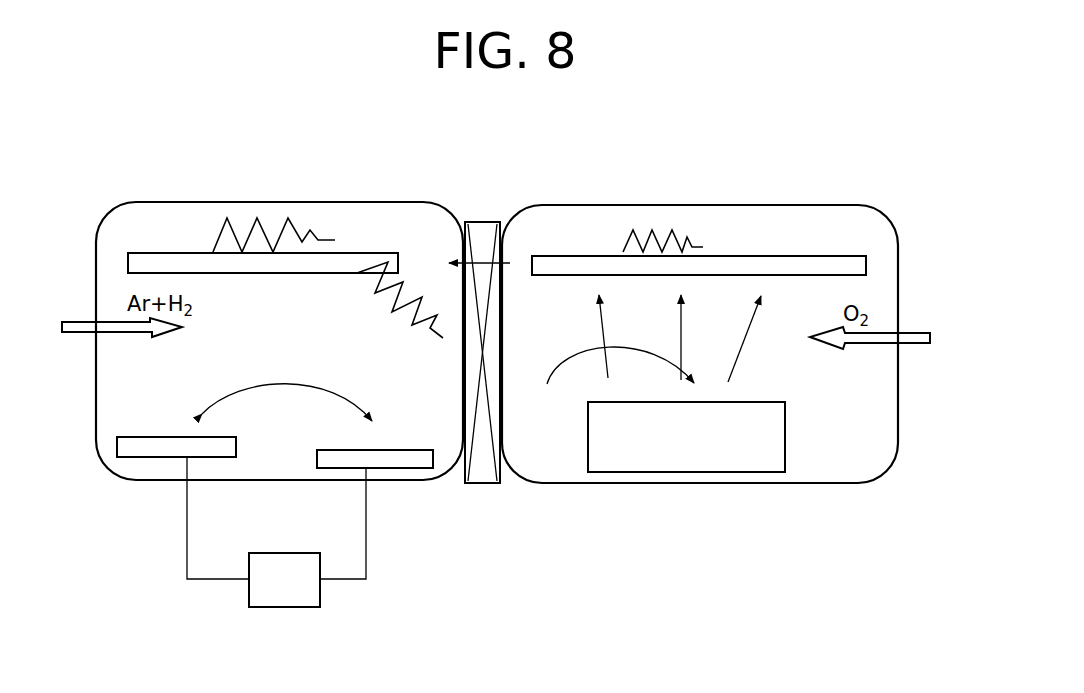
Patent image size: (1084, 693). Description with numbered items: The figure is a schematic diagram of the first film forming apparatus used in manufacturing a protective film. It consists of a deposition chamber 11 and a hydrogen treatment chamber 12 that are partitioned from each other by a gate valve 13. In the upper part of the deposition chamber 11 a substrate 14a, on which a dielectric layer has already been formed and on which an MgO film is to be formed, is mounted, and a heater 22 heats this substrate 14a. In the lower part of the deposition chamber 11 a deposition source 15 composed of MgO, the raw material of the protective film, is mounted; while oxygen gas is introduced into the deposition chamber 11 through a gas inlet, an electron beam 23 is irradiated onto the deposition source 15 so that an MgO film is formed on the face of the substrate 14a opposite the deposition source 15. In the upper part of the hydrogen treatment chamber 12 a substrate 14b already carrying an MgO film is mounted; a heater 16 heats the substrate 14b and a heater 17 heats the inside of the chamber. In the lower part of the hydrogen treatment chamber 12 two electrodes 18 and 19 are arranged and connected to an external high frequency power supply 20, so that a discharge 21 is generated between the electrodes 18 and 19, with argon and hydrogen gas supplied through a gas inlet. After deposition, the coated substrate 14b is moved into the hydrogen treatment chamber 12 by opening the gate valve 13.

The deposition chamber 11 is at (813, 228).
The hydrogen treatment chamber 12 is at (373, 227).
The gate valve 13 is at (482, 465).
The substrate 14a is at (585, 265).
The substrate 14b is at (155, 262).
The deposition source 15 is at (687, 455).
The heater 16 is at (303, 225).
The heater 17 is at (417, 277).
The electrode 18 is at (138, 447).
The electrode 19 is at (408, 460).
The high frequency power supply 20 is at (285, 607).
The discharge 21 is at (285, 376).
The heater 22 is at (662, 225).
The electron beam 23 is at (556, 370).